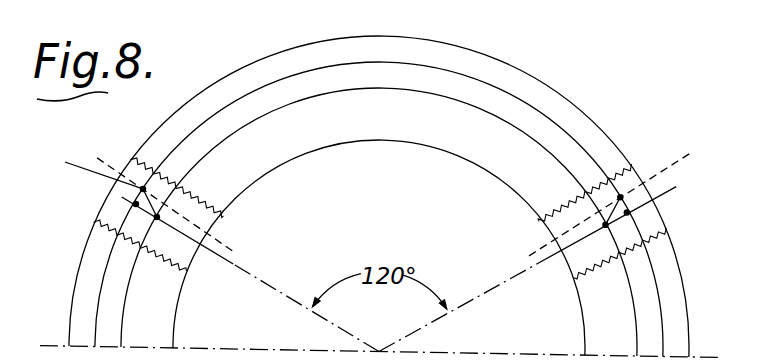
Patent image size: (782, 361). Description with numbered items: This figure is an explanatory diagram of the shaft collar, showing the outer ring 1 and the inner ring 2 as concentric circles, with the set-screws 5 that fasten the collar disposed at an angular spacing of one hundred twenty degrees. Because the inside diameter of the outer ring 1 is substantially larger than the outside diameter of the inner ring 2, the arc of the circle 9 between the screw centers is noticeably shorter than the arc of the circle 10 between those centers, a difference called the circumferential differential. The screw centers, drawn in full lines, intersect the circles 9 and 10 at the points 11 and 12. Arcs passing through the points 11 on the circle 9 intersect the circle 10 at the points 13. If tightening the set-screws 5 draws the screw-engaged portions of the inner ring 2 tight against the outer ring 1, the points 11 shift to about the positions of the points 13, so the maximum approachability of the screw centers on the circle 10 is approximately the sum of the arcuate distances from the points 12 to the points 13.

The outer ring 1 is at (452, 57).
The inner ring 2 is at (423, 120).
The set-screws 5 is at (132, 240).
The circle 9 is at (498, 120).
The circle 10 is at (513, 95).
The points 11 is at (157, 217).
The points 12 is at (136, 204).
The points 13 is at (143, 189).